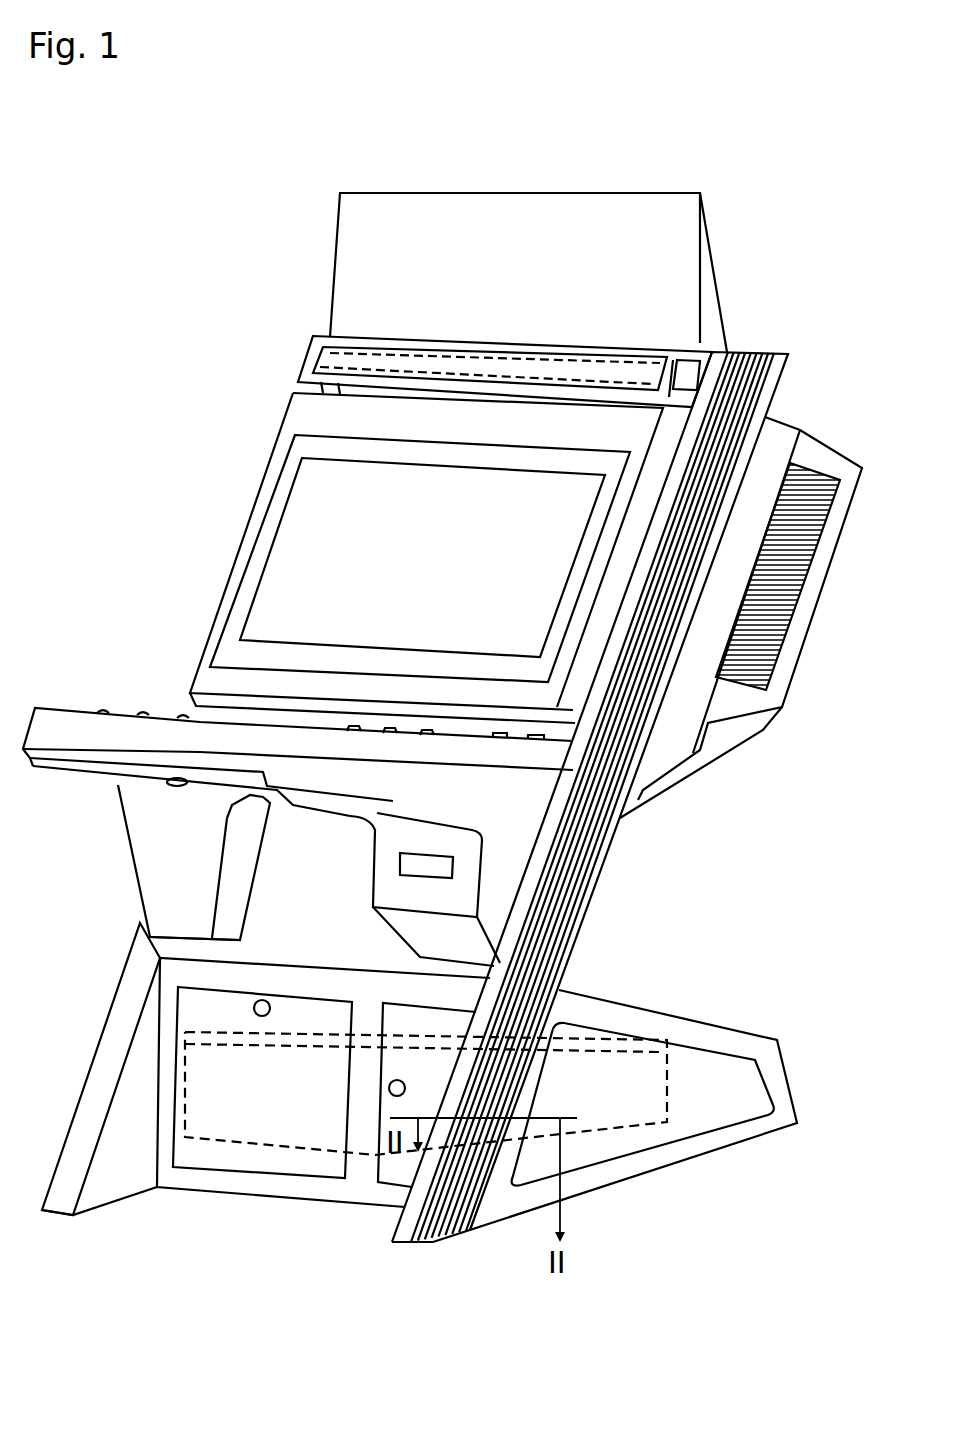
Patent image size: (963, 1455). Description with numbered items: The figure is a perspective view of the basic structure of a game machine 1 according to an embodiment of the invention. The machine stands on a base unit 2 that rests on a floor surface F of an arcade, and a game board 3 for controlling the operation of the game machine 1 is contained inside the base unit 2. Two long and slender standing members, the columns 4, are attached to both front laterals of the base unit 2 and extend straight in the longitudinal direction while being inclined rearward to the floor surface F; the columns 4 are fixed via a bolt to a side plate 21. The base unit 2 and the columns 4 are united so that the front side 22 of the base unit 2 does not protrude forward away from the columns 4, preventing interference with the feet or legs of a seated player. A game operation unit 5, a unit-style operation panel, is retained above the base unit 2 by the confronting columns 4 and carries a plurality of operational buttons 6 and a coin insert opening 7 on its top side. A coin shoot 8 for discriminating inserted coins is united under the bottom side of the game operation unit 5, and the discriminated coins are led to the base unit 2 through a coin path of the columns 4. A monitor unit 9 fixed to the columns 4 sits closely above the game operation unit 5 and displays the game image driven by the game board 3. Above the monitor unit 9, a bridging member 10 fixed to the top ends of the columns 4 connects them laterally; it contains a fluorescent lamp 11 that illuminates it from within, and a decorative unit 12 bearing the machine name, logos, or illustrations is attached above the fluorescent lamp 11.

The game machine 1 is at (248, 228).
The base unit 2 is at (360, 1205).
The game board 3 is at (667, 1097).
The standing members (columns) 4 is at (590, 908).
The game operation unit 5 is at (97, 770).
The operational buttons 6 is at (98, 708).
The coin insert opening 7 is at (537, 735).
The coin shoot 8 is at (125, 860).
The monitor unit 9 is at (803, 430).
The bridging member 10 is at (311, 357).
The fluorescent lamp 11 is at (404, 346).
The decorative unit 12 is at (650, 216).
The side plate 21 is at (68, 1215).
The front side of the unit 22 is at (258, 1185).
The floor surface F is at (805, 1130).